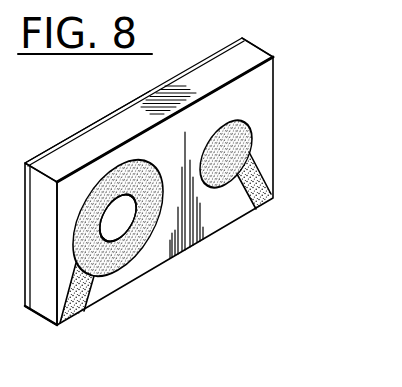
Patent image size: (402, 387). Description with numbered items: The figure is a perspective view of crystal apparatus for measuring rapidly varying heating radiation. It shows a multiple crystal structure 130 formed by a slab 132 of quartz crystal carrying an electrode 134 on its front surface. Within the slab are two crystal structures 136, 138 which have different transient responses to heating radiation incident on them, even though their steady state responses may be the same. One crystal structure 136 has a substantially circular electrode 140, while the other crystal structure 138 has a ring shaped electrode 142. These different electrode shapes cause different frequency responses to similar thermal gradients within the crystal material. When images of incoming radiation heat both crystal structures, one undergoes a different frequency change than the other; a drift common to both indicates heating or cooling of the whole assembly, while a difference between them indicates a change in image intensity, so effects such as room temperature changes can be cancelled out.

The multiple crystal structure 130 is at (274, 118).
The slab of quartz crystal 132 is at (258, 50).
The electrode 134 is at (83, 130).
The crystal structure 136 is at (253, 155).
The crystal structure 138 is at (140, 257).
The circular electrode 140 is at (222, 178).
The ring shaped electrode 142 is at (113, 256).